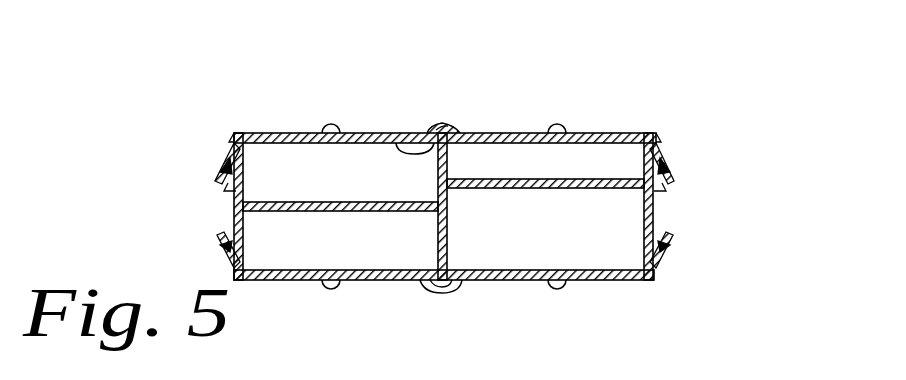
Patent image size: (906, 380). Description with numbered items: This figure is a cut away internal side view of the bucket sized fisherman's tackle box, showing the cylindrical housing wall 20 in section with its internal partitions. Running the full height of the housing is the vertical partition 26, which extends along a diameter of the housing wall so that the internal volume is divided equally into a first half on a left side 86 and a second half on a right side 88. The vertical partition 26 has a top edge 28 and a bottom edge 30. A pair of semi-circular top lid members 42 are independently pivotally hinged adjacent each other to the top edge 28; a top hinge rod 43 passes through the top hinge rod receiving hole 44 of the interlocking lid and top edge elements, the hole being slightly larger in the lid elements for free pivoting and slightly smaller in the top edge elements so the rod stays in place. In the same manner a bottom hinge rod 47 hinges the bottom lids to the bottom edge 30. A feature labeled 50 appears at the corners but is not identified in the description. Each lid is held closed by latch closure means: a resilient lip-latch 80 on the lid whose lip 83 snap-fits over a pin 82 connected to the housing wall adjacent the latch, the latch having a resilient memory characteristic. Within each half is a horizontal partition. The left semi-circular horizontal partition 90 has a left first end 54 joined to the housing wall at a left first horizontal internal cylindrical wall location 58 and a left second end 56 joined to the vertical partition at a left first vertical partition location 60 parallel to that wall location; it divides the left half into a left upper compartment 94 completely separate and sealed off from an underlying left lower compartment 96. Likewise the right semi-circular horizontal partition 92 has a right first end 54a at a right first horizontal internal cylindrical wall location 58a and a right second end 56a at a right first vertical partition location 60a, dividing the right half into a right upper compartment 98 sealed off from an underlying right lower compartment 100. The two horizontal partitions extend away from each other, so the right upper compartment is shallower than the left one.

The cylindrical housing wall 20 is at (654, 206).
The vertical partition 26 is at (450, 251).
The top edge 28 is at (394, 143).
The bottom edge 30 is at (405, 280).
The semi-circular top lid members 42 is at (296, 133).
The top hinge rod 43 is at (447, 134).
The top hinge rod receiving hole 44 is at (441, 128).
The bottom hinge rod 47 is at (452, 286).
The corner 50 is at (232, 132).
The left first end 54 is at (249, 213).
The right first end 54a is at (641, 196).
The left second end 56 is at (436, 205).
The right second end 56a is at (450, 188).
The left first horizontal internal cylindrical wall location 58 is at (250, 201).
The right first horizontal internal cylindrical wall location 58a is at (640, 178).
The left first vertical partition location 60 is at (436, 210).
The right first vertical partition location 60a is at (452, 178).
The resilient lip-latch 80 is at (729, 299).
The pin 82 is at (242, 172).
The lip 83 is at (230, 235).
The left side 86 is at (360, 282).
The right side 88 is at (606, 284).
The left semi-circular horizontal partition 90 is at (338, 212).
The right semi-circular horizontal partition 92 is at (643, 188).
The left upper compartment 94 is at (337, 172).
The left lower compartment 96 is at (355, 255).
The right upper compartment 98 is at (504, 175).
The right lower compartment 100 is at (518, 252).